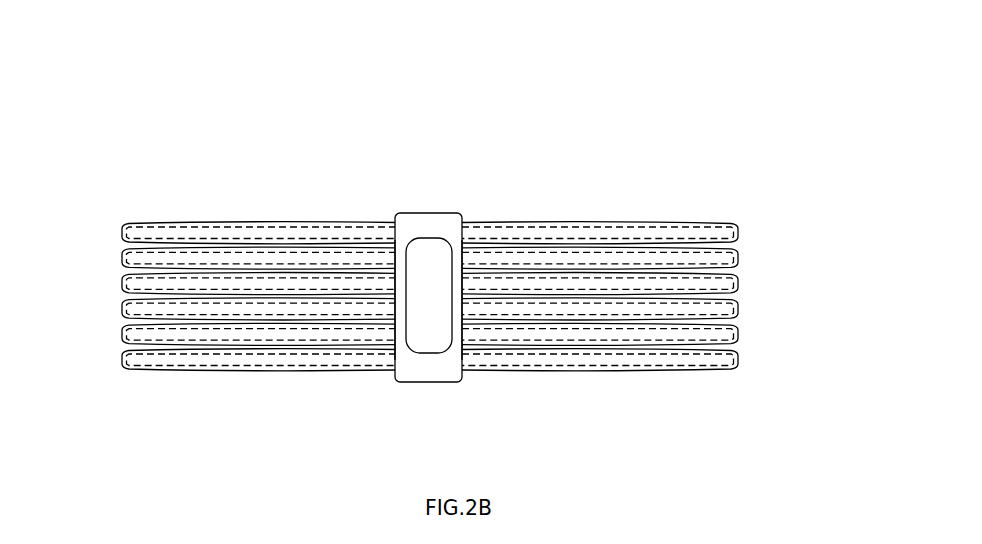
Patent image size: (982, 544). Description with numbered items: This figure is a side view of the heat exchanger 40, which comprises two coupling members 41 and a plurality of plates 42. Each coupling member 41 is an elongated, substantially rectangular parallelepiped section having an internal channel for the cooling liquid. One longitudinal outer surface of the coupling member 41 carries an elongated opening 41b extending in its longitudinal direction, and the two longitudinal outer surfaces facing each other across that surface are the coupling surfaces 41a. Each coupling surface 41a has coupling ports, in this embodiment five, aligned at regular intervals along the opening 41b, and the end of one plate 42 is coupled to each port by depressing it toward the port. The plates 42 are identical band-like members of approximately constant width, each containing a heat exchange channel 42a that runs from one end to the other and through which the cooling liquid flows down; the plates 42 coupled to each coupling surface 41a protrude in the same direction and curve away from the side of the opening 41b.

The heat exchanger 40 is at (431, 249).
The coupling member 41 is at (438, 221).
The coupling surface 41a is at (395, 303).
The opening 41b is at (428, 353).
The plate 42 is at (431, 256).
The heat exchange channel 42a is at (262, 209).